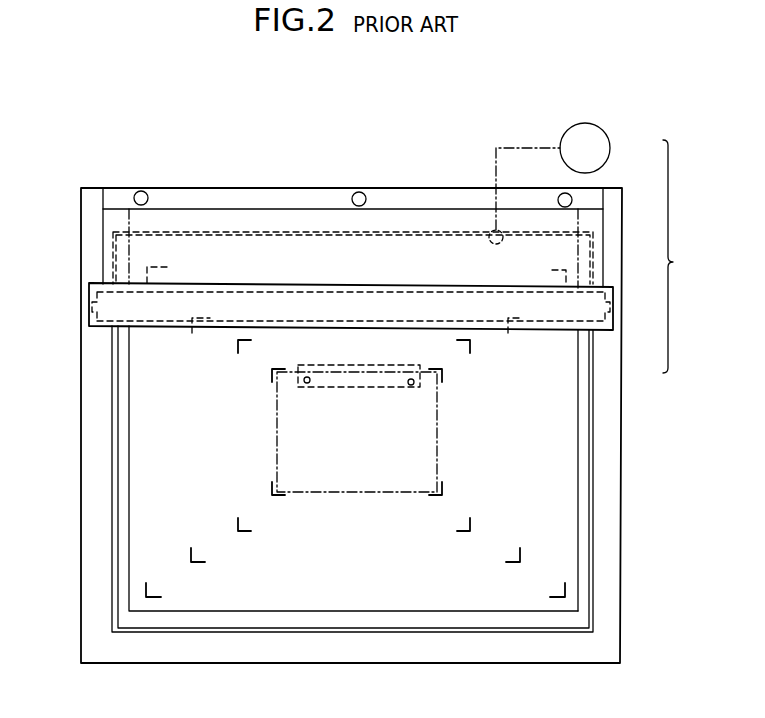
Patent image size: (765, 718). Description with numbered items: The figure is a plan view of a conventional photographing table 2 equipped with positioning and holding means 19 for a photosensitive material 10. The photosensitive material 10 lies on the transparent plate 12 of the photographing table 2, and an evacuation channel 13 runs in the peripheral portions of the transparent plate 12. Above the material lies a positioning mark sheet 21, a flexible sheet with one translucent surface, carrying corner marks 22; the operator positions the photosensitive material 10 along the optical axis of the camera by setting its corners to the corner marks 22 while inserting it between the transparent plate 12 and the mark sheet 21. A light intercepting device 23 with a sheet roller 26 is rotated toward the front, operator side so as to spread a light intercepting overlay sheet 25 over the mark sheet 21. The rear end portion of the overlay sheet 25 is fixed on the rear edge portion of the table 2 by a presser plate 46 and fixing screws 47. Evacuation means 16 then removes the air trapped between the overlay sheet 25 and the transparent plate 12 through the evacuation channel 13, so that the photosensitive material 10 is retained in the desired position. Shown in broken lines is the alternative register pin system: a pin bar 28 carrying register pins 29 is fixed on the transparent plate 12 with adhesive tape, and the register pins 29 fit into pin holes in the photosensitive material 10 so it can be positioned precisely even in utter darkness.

The photographing table 2 is at (384, 648).
The photosensitive material 10 is at (410, 493).
The transparent plate 12 is at (458, 612).
The evacuation channel 13 is at (418, 233).
The evacuation means 16 is at (610, 150).
The positioning and holding means 19 is at (682, 256).
The positioning mark sheet 21 is at (578, 383).
The corner marks 22 is at (470, 520).
The light intercepting device 23 is at (613, 310).
The light intercepting overlay sheet 25 is at (103, 245).
The sheet roller 26 is at (248, 283).
The pin bar 28 is at (365, 388).
The register pins 29 is at (307, 384).
The presser plate 46 is at (222, 198).
The fixing screws 47 is at (357, 192).